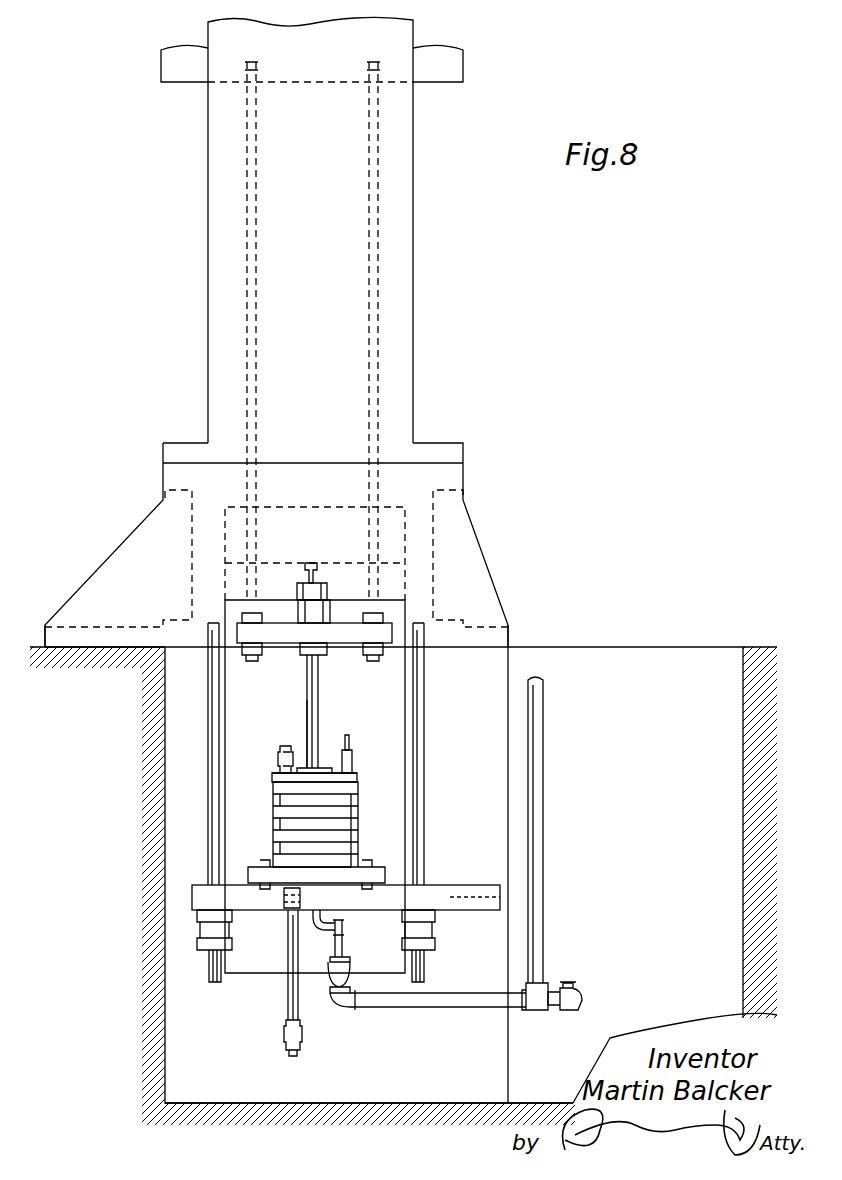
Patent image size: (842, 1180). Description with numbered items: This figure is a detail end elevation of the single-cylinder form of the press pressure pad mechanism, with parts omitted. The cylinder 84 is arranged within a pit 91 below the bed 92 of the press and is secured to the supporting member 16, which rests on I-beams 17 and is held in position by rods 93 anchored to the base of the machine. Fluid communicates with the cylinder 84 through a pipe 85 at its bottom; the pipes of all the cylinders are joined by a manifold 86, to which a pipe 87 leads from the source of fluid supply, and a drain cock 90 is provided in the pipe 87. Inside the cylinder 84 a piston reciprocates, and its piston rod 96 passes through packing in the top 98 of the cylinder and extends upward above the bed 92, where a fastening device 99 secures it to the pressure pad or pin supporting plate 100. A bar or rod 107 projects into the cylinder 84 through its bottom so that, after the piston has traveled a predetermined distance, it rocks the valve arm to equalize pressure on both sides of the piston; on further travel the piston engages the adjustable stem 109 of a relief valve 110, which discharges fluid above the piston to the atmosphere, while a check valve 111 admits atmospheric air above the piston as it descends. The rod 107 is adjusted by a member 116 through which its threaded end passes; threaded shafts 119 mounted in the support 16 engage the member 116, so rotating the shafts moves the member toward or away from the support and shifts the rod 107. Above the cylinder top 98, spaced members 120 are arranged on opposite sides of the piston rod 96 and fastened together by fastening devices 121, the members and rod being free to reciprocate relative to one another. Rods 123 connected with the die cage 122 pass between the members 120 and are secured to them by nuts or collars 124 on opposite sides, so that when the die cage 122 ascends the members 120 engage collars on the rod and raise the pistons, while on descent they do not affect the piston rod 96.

The supporting member 16 is at (432, 942).
The I-beams 17 is at (448, 886).
The cylinder 84 is at (358, 826).
The pipe 85 is at (320, 897).
The manifold 86 is at (352, 968).
The pipe 87 is at (540, 800).
The drain cock 90 is at (575, 985).
The pit 91 is at (174, 1057).
The bed 92 is at (455, 632).
The rods 93 is at (420, 718).
The piston rod 96 is at (319, 720).
The top of the cylinder 98 is at (358, 772).
The fastening device 99 is at (308, 560).
The pressure pad or pin supporting plate 100 is at (345, 563).
The bar or rod 107 is at (298, 985).
The adjustable stem 109 is at (349, 735).
The relief valve 110 is at (354, 745).
The check valve 111 is at (282, 762).
The member 116 is at (285, 1030).
The threaded shafts 119 is at (290, 910).
The spaced members 120 is at (292, 645).
The fastening devices 121 is at (334, 625).
The die cage 122 is at (440, 78).
The rods 123 is at (372, 268).
The nuts or collars 124 is at (384, 648).